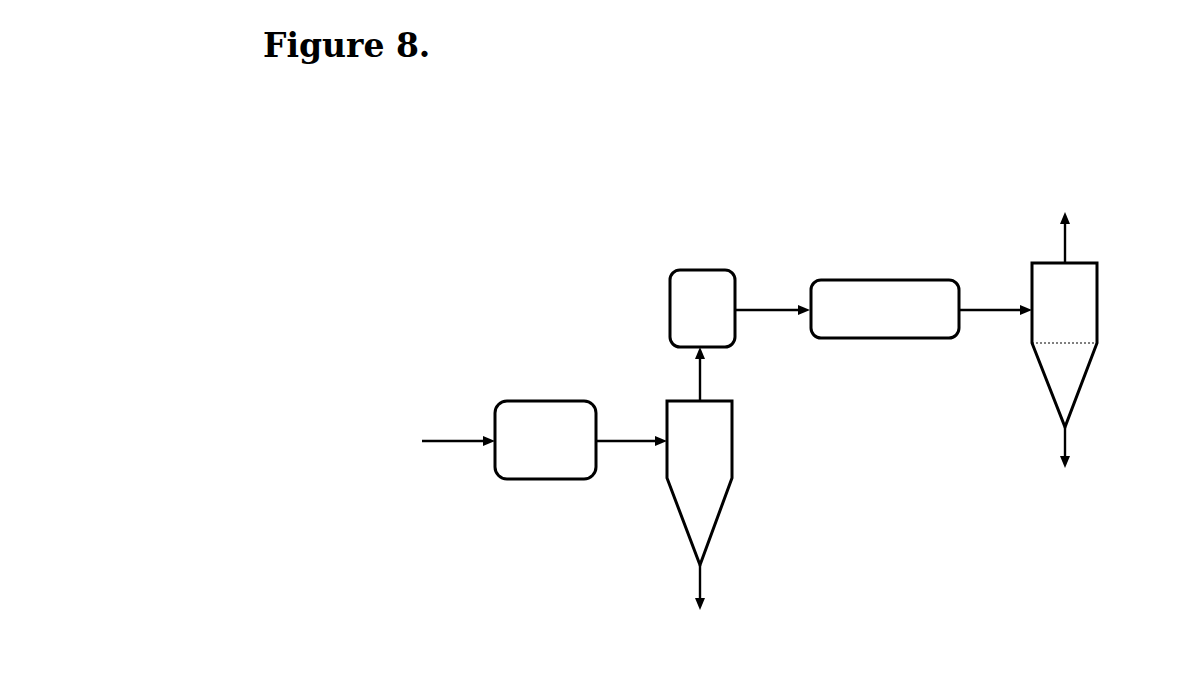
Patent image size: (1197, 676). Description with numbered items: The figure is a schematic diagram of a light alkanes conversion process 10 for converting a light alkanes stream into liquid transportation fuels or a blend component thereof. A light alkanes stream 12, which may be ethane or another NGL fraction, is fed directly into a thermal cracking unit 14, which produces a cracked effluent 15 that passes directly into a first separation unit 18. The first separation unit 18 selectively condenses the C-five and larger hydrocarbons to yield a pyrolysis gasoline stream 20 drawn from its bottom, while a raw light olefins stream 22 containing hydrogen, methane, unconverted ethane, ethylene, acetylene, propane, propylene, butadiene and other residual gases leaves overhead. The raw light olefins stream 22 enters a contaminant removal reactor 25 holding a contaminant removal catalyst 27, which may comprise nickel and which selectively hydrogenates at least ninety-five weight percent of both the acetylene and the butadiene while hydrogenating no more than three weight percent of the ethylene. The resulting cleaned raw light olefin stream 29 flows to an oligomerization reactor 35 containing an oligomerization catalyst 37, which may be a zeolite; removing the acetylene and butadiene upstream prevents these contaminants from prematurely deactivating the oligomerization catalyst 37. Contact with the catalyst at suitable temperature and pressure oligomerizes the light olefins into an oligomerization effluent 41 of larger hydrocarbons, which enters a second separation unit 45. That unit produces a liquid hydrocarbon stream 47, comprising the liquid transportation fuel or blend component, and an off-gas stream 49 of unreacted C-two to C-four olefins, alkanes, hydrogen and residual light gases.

The light alkanes conversion process 10 is at (536, 189).
The light alkanes stream 12 is at (441, 441).
The thermal cracking unit 14 is at (545, 440).
The cracked effluent 15 is at (631, 428).
The first separation unit 18 is at (740, 405).
The pyrolysis gasoline stream 20 is at (700, 603).
The raw light olefins stream 22 is at (715, 374).
The contaminant removal reactor 25 is at (665, 272).
The contaminant removal catalyst 27 is at (702, 308).
The cleaned raw light olefin stream 29 is at (772, 298).
The oligomerization reactor 35 is at (877, 272).
The oligomerization catalyst 37 is at (885, 309).
The oligomerization effluent 41 is at (995, 297).
The second separation unit 45 is at (1106, 280).
The liquid hydrocarbon stream 47 is at (1065, 461).
The off-gas stream 49 is at (1068, 222).